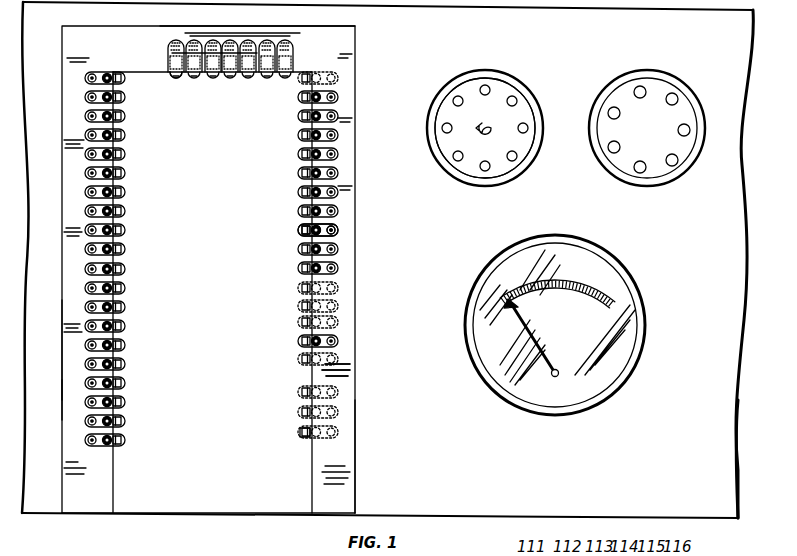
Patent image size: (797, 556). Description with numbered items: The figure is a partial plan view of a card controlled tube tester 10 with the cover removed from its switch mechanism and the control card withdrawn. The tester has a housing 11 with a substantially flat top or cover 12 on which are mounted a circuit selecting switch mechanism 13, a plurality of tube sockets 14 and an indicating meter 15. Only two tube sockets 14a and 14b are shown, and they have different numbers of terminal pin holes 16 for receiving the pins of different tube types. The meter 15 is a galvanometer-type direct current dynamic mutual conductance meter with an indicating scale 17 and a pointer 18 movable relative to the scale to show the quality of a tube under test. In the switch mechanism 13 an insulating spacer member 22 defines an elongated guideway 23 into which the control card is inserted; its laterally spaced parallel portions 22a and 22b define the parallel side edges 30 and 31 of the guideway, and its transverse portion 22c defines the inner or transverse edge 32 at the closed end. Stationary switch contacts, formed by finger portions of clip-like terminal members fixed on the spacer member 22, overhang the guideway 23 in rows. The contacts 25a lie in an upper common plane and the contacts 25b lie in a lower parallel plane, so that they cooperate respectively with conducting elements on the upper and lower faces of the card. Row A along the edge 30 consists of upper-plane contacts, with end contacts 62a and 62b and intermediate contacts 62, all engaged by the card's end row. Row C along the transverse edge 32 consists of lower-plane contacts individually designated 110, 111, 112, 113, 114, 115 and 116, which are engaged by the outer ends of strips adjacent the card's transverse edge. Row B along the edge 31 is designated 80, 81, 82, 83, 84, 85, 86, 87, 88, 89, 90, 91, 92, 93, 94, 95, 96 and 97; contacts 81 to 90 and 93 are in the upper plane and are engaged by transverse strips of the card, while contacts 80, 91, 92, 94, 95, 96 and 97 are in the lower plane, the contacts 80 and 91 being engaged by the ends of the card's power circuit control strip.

The card controlled tube tester 10 is at (747, 165).
The housing 11 is at (716, 520).
The top or cover 12 is at (713, 440).
The circuit selecting switch mechanism 13 is at (362, 89).
The tube socket 14 is at (522, 84).
The tube socket 14a is at (502, 135).
The tube socket 14b is at (619, 116).
The indicating meter 15 is at (566, 325).
The terminal pin hole 16 is at (529, 126).
The indicating scale 17 is at (567, 275).
The pointer 18 is at (540, 340).
The spacer member 22 is at (67, 346).
The parallel portion of spacer member 22a is at (67, 390).
The parallel portion of spacer member 22b is at (347, 444).
The transverse portion of spacer member 22c is at (158, 27).
The guideway 23 is at (162, 504).
The stationary switch contact 25a is at (126, 155).
The stationary switch contact 25b is at (300, 78).
The side edge of guideway 30 is at (114, 470).
The side edge of guideway 31 is at (311, 478).
The inner or transverse edge of guideway 32 is at (143, 74).
The stationary switch contact 62 is at (126, 327).
The stationary switch contact 62a is at (126, 63).
The stationary switch contact 62b is at (125, 442).
The switch contact 80 is at (298, 97).
The switch contact 81 is at (298, 116).
The switch contact 82 is at (298, 154).
The switch contact 83 is at (298, 173).
The switch contact 84 is at (298, 192).
The switch contact 85 is at (298, 211).
The switch contact 86 is at (298, 230).
The switch contact 87 is at (298, 249).
The switch contact 88 is at (298, 268).
The switch contact 89 is at (298, 288).
The switch contact 90 is at (298, 306).
The switch contact 91 is at (298, 341).
The switch contact 92 is at (298, 359).
The switch contact 93 is at (298, 372).
The switch contact 94 is at (298, 392).
The switch contact 95 is at (298, 412).
The switch contact 96 is at (298, 432).
The switch contact 97 is at (300, 437).
The switch contact 110 is at (177, 83).
The switch contact 111 is at (191, 84).
The switch contact 112 is at (209, 83).
The switch contact 113 is at (228, 84).
The switch contact 114 is at (246, 83).
The switch contact 115 is at (265, 84).
The switch contact 116 is at (284, 83).
The contact row A is at (130, 383).
The contact row B is at (296, 240).
The contact row C is at (168, 78).